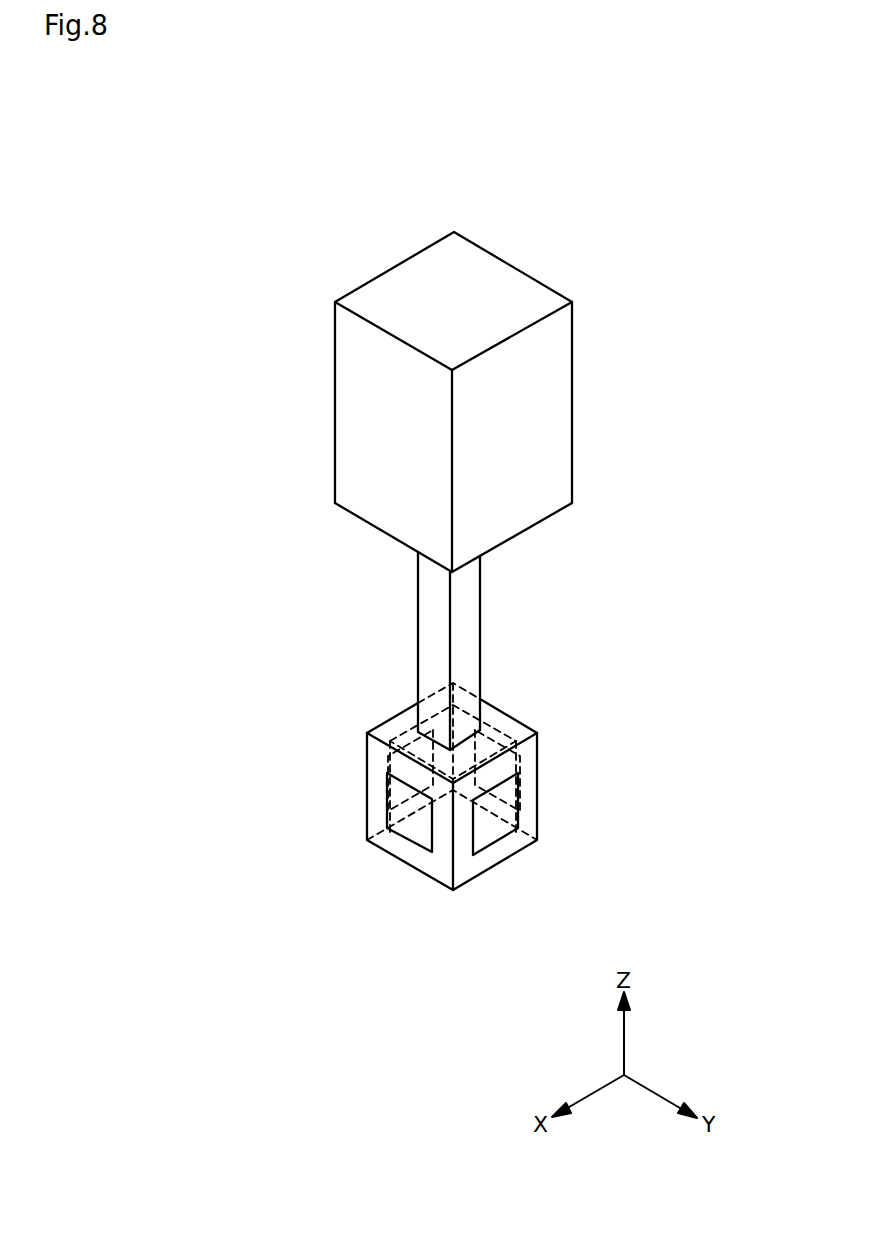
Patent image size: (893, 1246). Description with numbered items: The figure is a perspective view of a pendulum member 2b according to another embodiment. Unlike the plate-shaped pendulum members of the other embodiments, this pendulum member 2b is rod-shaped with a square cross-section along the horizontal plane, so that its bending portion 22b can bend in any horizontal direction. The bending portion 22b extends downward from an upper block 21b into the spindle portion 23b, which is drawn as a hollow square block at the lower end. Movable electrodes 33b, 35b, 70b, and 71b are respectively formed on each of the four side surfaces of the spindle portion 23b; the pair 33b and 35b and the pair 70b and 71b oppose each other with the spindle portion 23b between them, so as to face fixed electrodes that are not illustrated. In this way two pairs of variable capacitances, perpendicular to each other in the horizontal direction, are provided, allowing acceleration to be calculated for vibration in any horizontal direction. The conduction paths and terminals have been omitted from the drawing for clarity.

The pendulum member 2b is at (540, 244).
The weight 21b is at (573, 395).
The bending portion 22b is at (481, 622).
The spindle portion 23b is at (538, 775).
The movable electrode 33b is at (410, 825).
The movable electrode 35b is at (503, 732).
The movable electrode 70b is at (493, 827).
The movable electrode 71b is at (412, 748).